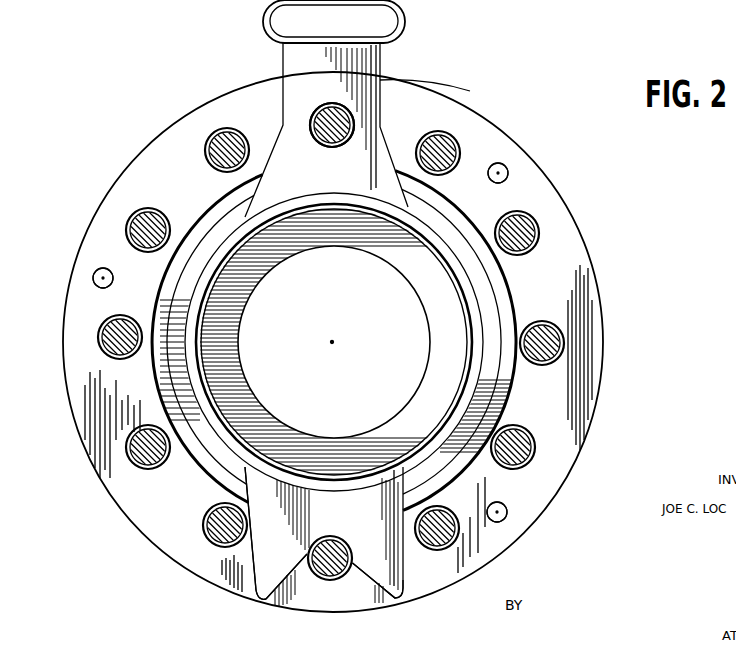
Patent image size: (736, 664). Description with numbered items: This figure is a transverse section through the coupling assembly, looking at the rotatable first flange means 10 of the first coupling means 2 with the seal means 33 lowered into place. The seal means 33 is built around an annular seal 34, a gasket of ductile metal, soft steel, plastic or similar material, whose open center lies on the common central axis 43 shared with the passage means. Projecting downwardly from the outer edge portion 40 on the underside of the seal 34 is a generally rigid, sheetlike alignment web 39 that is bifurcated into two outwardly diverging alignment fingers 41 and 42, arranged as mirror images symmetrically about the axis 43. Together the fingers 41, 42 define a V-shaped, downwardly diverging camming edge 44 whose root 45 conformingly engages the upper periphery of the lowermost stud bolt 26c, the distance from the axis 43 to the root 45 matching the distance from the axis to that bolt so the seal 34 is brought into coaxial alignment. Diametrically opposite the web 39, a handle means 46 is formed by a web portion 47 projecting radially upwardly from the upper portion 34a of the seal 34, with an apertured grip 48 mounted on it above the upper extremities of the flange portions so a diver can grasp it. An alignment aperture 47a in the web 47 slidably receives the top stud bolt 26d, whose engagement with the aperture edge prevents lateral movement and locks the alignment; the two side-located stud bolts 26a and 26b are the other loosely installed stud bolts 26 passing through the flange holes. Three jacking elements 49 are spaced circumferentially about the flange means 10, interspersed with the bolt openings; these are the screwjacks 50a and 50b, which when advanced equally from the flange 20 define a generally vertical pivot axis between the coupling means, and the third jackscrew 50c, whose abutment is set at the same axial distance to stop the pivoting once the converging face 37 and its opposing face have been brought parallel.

The first flange means 10 is at (577, 235).
The flange 20 is at (449, 6).
The first coupling means 2 is at (489, 6).
The stud bolt 26 is at (520, 465).
The side stud bolt 26a is at (550, 343).
The side stud bolt 26b is at (98, 336).
The lowermost stud bolt 26c is at (327, 573).
The top stud bolt 26d is at (330, 134).
The seal means 33 is at (445, 77).
The annular seal 34 is at (435, 253).
The upper portion of seal 34a is at (276, 201).
The face 37 is at (432, 338).
The alignment web 39 is at (409, 597).
The outer edge portion of seal 40 is at (280, 483).
The alignment finger 41 is at (258, 577).
The alignment finger 42 is at (397, 574).
The central axis 43 is at (331, 340).
The camming edge 44 is at (272, 607).
The root of camming edge 45 is at (310, 552).
The handle means 46 is at (363, 137).
The web portion 47 is at (300, 178).
The alignment aperture 47a is at (337, 102).
The apertured grip 48 is at (268, 34).
The jacking element 49 is at (502, 157).
The screwjack 50a is at (510, 171).
The screwjack 50b is at (503, 517).
The third jackscrew 50c is at (93, 279).